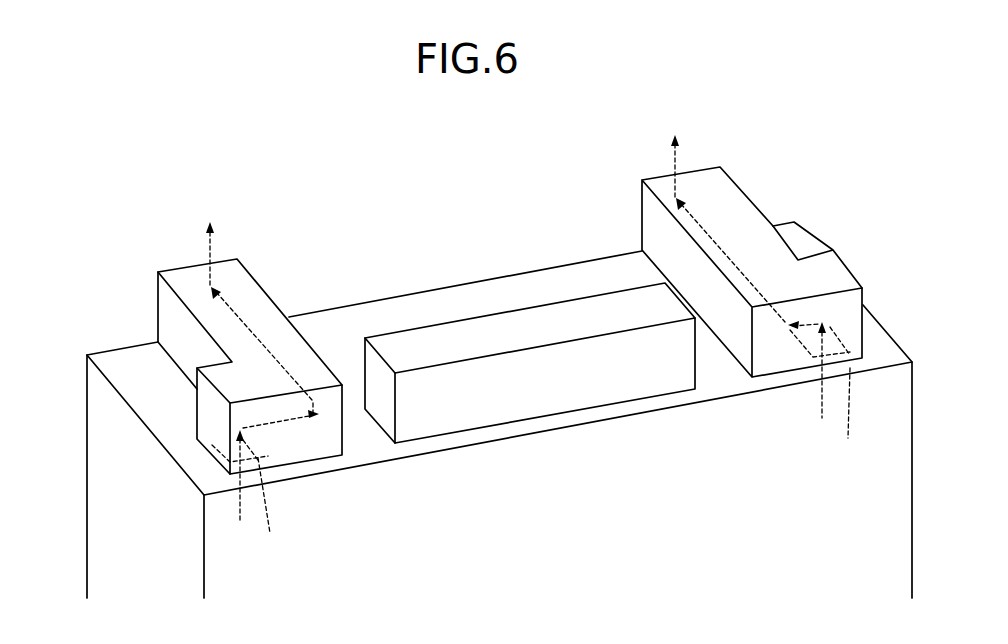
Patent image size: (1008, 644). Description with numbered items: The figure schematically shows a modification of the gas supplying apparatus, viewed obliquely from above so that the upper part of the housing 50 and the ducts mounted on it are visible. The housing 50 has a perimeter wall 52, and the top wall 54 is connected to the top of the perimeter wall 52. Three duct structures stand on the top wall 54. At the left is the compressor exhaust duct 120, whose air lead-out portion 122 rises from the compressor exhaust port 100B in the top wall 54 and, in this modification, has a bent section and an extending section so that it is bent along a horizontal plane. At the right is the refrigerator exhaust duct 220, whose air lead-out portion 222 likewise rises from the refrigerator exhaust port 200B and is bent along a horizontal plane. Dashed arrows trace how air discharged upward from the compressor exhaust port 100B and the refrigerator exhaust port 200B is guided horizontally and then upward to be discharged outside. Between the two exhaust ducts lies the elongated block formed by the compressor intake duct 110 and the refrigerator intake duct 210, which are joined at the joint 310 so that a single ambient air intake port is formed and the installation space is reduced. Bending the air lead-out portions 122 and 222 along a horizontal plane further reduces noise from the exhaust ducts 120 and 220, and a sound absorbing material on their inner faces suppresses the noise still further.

The housing 50 is at (103, 352).
The perimeter wall 52 is at (466, 410).
The top wall 54 is at (470, 296).
The compressor intake duct 110 is at (533, 370).
The compressor exhaust duct 120 is at (176, 333).
The air lead-out portion 122 is at (212, 405).
The refrigerator intake duct 210 is at (675, 375).
The refrigerator exhaust duct 220 is at (773, 272).
The air lead-out portion 222 is at (856, 303).
The joint 310 is at (530, 328).
The compressor exhaust port 100B is at (262, 395).
The refrigerator exhaust port 200B is at (773, 303).